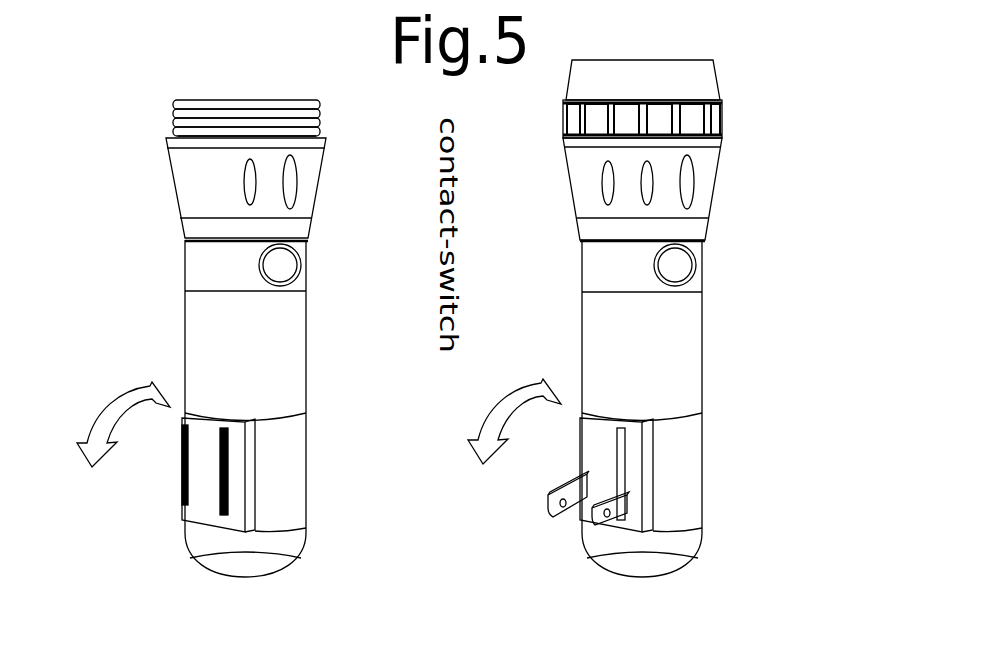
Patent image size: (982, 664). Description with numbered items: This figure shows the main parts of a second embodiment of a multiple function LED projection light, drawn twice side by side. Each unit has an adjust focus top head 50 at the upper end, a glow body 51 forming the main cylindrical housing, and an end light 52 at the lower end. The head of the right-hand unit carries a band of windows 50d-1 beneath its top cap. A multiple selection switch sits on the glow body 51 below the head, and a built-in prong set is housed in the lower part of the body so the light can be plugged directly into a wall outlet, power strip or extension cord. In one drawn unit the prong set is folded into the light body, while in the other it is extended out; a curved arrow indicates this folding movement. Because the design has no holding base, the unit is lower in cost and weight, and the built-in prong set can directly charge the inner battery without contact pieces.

The adjust focus top head 50 is at (742, 136).
The light window band 50d-1 is at (722, 123).
The glow body 51 is at (677, 377).
The end light 52 is at (690, 543).